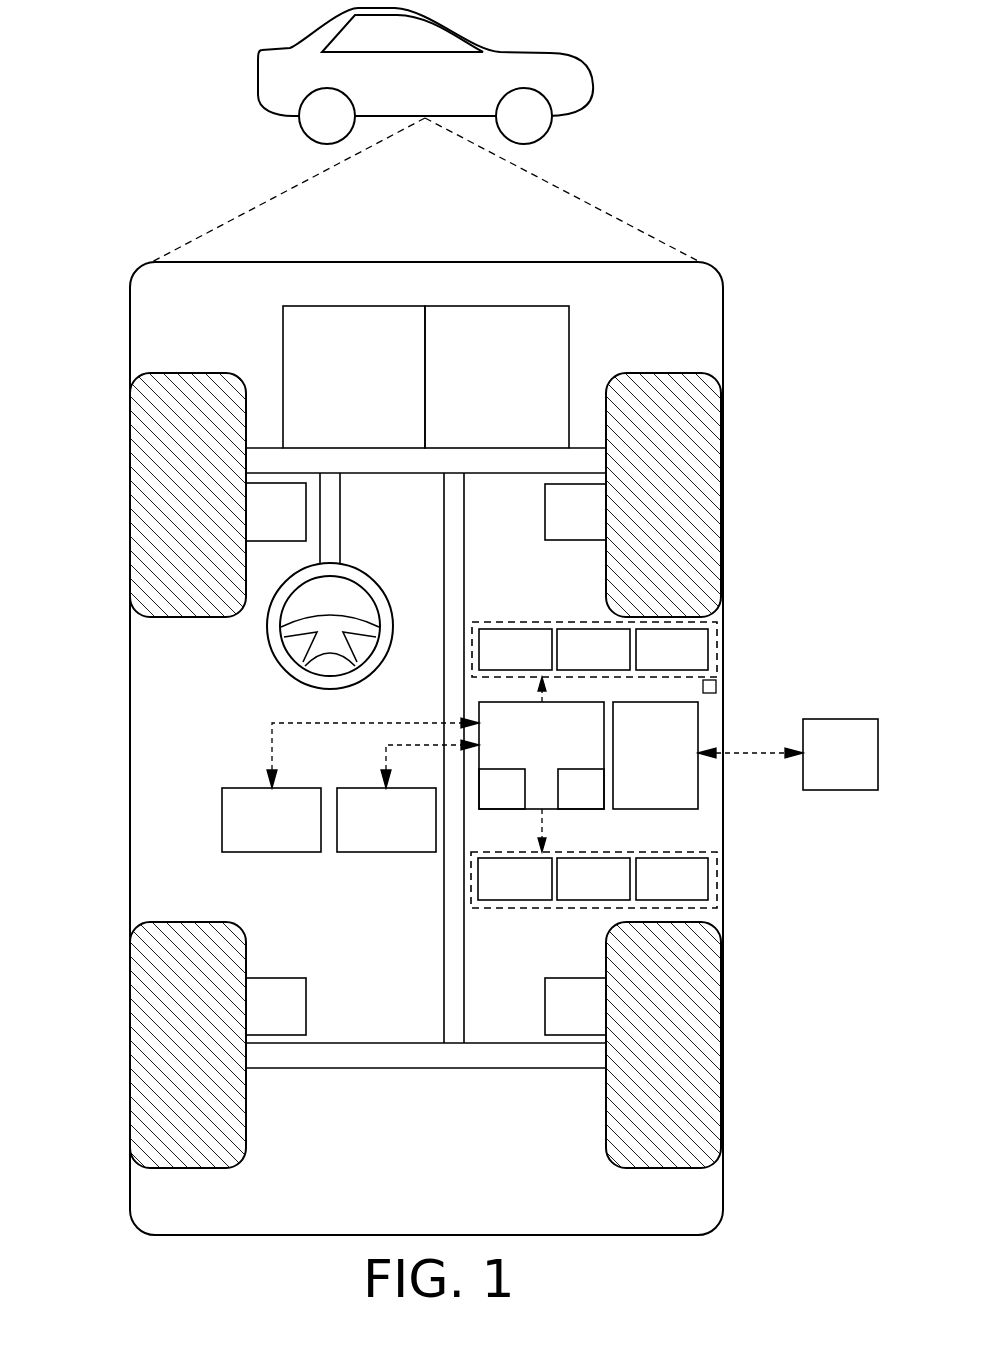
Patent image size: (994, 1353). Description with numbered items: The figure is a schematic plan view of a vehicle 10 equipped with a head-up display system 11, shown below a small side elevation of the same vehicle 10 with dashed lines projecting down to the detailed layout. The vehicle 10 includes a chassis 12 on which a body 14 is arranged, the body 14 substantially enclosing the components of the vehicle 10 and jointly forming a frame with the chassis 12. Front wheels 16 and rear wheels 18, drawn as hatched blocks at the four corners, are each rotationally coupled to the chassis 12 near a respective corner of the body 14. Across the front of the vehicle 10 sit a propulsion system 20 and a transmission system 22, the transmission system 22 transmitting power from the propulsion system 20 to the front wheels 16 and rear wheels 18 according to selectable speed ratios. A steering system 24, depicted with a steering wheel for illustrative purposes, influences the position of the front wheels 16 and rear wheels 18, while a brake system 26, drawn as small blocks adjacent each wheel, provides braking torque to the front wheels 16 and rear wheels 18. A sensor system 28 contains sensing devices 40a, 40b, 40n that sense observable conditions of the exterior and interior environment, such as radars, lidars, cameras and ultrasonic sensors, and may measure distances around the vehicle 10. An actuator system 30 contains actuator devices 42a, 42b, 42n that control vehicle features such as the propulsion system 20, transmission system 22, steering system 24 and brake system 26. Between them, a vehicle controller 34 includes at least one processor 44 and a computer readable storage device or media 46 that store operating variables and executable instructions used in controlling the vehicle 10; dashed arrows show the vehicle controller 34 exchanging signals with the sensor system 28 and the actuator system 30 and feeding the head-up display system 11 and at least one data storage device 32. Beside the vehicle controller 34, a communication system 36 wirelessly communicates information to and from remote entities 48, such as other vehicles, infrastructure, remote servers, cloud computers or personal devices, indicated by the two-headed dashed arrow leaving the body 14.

The vehicle 10 is at (411, 94).
The head-up display system 11 is at (256, 832).
The chassis 12 is at (444, 950).
The body 14 is at (130, 748).
The front wheels 16 is at (188, 373).
The rear wheels 18 is at (188, 1168).
The propulsion system 20 is at (338, 392).
The transmission system 22 is at (482, 392).
The steering system 24 is at (360, 511).
The brake system 26 is at (261, 526).
The sensor system 28 is at (560, 622).
The actuator system 30 is at (568, 908).
The data storage device 32 is at (371, 832).
The vehicle controller 34 is at (527, 747).
The communication system 36 is at (640, 766).
The sensing device 40a is at (494, 661).
The sensing device 40b is at (572, 661).
The sensing device 40n is at (651, 661).
The actuator device 42a is at (494, 892).
The actuator device 42b is at (572, 892).
The actuator device 42n is at (651, 892).
The processor 44 is at (487, 802).
The computer readable storage device or media 46 is at (566, 802).
The remote entities 48 is at (825, 766).